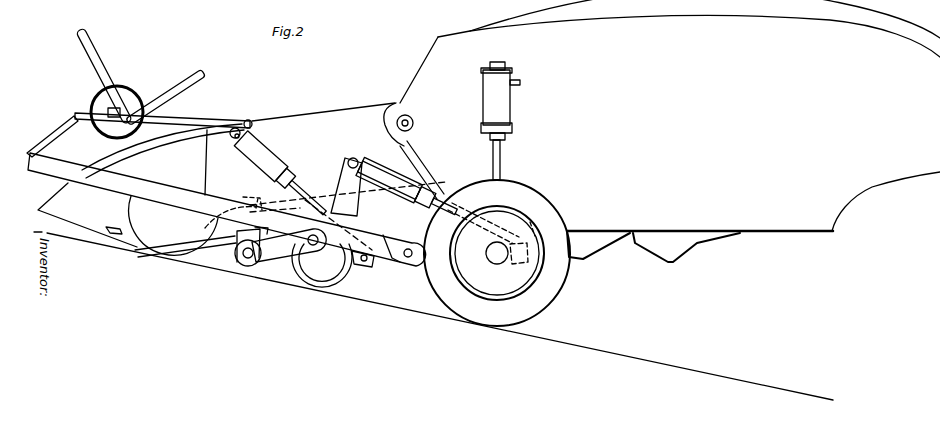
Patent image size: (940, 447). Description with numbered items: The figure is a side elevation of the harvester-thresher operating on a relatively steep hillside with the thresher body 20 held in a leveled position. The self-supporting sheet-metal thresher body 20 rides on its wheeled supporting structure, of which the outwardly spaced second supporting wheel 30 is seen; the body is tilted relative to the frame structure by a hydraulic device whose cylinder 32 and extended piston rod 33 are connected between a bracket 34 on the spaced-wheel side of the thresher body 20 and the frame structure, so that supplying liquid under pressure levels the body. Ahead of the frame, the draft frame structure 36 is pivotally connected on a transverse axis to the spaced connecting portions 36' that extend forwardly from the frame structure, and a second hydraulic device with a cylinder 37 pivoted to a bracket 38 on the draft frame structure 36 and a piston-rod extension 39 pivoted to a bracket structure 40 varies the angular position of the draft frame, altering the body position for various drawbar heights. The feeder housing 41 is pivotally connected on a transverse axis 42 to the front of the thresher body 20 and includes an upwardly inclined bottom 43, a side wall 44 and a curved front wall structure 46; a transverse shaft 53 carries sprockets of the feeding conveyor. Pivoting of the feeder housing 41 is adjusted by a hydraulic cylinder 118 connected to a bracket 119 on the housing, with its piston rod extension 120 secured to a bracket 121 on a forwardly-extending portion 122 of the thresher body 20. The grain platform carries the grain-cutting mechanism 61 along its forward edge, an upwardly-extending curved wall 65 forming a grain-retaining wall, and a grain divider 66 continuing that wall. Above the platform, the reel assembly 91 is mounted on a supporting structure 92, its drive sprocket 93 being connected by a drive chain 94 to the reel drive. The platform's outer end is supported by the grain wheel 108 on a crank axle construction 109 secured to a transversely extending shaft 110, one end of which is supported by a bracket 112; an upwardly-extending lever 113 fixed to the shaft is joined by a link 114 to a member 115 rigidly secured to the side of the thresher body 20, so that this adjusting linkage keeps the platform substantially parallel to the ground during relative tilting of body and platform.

The thresher body 20 is at (523, 35).
The second supporting wheel 30 is at (549, 288).
The cylinder 32 is at (503, 105).
The piston rod 33 is at (505, 160).
The bracket 34 is at (510, 66).
The draft frame structure 36 is at (58, 139).
The spaced connecting portions 36' is at (425, 246).
The cylinder 37 is at (400, 197).
The bracket 38 is at (350, 160).
The piston-rod extension 39 is at (460, 204).
The bracket structure 40 is at (531, 228).
The feeder housing 41 is at (201, 153).
The transverse axis 42 is at (413, 117).
The upwardly inclined bottom 43 is at (404, 150).
The side wall 44 is at (304, 120).
The curved front wall structure 46 is at (147, 237).
The transverse shaft 53 is at (397, 103).
The grain-cutting mechanism 61 is at (108, 234).
The upwardly-extending curved wall 65 is at (140, 157).
The grain divider 66 is at (70, 192).
The reel assembly 91 is at (98, 57).
The supporting structure 92 is at (240, 120).
The drive sprocket 93 is at (130, 97).
The drive chain 94 is at (178, 105).
The grain wheel 108 is at (310, 287).
The crank axle construction 109 is at (280, 270).
The transversely extending shaft 110 is at (245, 270).
The bracket 112 is at (233, 263).
The upwardly-extending lever 113 is at (217, 227).
The link 114 is at (353, 187).
The member 115 is at (417, 167).
The cylinder 118 is at (257, 149).
The bracket 119 is at (237, 142).
The piston rod extension 120 is at (300, 194).
The bracket 121 is at (360, 267).
The forwardly-extending portion 122 is at (384, 222).